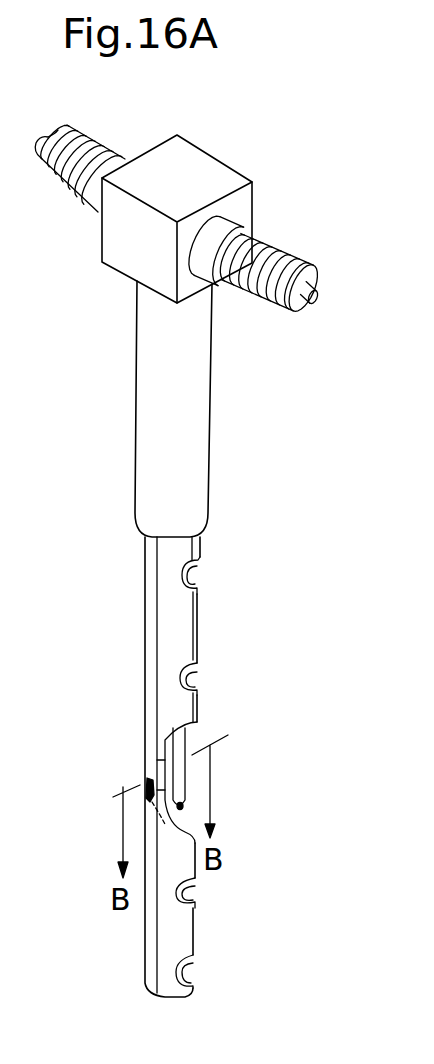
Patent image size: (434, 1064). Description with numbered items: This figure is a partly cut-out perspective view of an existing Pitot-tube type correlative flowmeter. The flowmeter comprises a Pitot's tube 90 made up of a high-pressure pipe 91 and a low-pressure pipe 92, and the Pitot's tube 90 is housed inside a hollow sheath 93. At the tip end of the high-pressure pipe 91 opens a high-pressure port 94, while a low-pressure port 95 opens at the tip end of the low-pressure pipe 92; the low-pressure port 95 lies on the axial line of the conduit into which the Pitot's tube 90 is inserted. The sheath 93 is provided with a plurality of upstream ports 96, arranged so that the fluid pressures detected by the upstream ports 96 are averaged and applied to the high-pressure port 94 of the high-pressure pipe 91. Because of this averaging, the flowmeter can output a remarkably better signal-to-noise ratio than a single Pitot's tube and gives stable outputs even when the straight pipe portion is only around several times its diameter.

The Pitot's tube 90 is at (250, 462).
The high-pressure pipe 91 is at (200, 572).
The low-pressure pipe 92 is at (151, 780).
The hollow sheath 93 is at (140, 912).
The high-pressure port 94 is at (186, 809).
The low-pressure port 95 is at (138, 802).
The upstream ports 96 is at (198, 583).